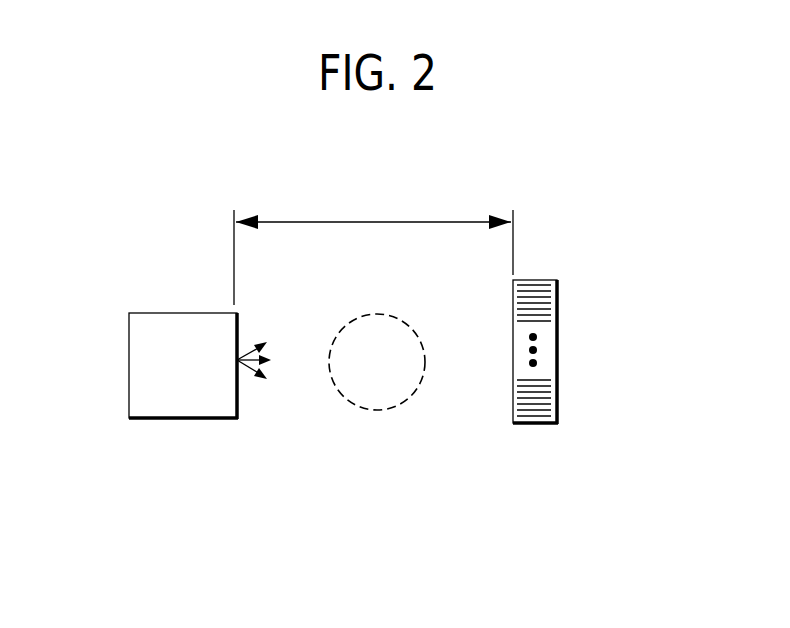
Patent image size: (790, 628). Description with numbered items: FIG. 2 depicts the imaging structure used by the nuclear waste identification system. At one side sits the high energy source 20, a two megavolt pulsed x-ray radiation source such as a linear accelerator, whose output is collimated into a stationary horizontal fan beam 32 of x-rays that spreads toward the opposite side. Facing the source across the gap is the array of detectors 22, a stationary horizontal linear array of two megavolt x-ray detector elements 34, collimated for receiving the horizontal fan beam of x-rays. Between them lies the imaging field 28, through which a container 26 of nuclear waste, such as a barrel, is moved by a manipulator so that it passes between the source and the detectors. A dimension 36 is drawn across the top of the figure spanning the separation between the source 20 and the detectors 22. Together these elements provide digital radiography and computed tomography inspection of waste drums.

The high energy source 20 is at (178, 421).
The array of detectors 22 is at (530, 424).
The container 26 is at (390, 375).
The imaging field 28 is at (336, 495).
The fan beam 32 is at (251, 316).
The detector elements 34 is at (571, 299).
The source-detector distance 36 is at (348, 222).